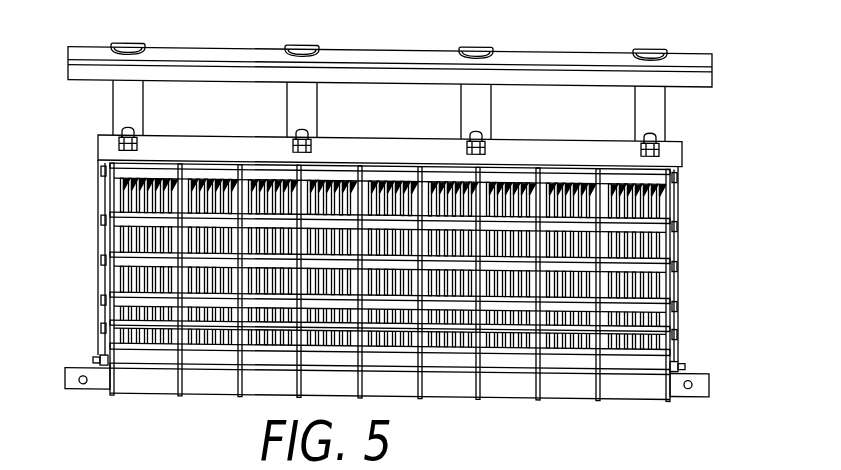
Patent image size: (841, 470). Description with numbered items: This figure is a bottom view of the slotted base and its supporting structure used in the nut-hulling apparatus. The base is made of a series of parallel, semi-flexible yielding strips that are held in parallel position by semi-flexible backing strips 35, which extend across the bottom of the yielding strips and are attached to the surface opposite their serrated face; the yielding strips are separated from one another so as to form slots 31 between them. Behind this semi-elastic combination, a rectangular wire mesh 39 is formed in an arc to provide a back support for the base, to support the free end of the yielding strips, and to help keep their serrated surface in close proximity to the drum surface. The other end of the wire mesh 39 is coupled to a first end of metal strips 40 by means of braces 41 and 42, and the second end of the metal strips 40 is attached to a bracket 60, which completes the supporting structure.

The bracket 60 is at (566, 60).
The metal strips 40 is at (666, 112).
The brace 42 is at (104, 145).
The brace 41 is at (98, 168).
The slots 31 is at (142, 197).
The wire mesh 39 is at (667, 238).
The backing strips 35 is at (672, 298).